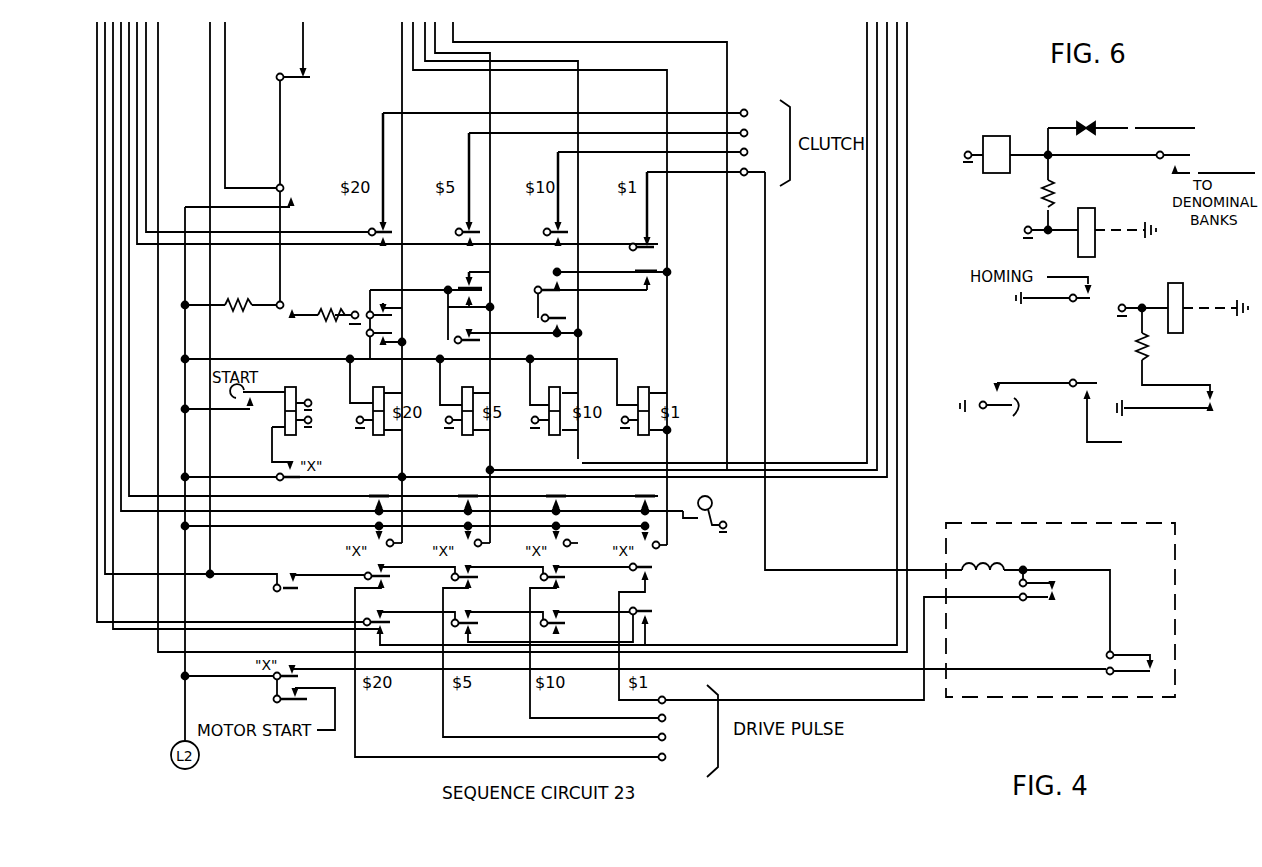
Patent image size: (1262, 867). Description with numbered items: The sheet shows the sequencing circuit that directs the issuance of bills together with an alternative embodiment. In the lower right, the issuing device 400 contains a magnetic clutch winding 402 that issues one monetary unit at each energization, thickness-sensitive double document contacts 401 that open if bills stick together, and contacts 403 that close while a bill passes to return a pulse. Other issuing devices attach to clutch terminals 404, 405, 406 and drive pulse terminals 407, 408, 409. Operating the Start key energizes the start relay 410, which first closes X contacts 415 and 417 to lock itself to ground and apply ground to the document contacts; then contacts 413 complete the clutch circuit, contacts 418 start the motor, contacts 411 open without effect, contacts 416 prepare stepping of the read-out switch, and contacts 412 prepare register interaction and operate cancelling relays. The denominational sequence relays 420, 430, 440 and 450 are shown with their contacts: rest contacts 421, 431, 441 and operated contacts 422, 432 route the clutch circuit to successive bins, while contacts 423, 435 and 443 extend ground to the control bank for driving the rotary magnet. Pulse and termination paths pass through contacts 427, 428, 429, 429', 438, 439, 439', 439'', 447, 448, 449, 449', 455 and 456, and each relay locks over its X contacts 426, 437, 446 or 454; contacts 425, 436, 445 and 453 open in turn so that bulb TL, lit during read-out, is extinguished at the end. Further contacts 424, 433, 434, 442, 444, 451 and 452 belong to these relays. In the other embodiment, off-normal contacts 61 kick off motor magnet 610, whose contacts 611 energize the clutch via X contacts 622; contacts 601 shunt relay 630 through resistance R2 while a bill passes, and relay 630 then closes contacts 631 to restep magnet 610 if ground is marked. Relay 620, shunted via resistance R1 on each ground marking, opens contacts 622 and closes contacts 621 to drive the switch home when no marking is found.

In FIG. 4, the issuing device 400 is at (1176, 612).
In FIG. 4, the double document sensing contacts 401 is at (1154, 660).
In FIG. 4, the magnetic clutch winding 402 is at (1000, 576).
In FIG. 4, the bill passage contacts 403 is at (1058, 585).
In FIG. 4, the clutch terminal 404 is at (583, 113).
In FIG. 4, the clutch terminal 405 is at (626, 133).
In FIG. 4, the clutch terminal 406 is at (670, 152).
In FIG. 4, the drive pulse terminal 407 is at (615, 718).
In FIG. 4, the drive pulse terminal 408 is at (572, 738).
In FIG. 4, the drive pulse terminal 409 is at (528, 757).
In FIG. 4, the start relay 410 is at (284, 392).
In FIG. 4, the contacts 411 is at (303, 79).
In FIG. 4, the contacts 412 is at (292, 195).
In FIG. 4, the contacts 413 is at (292, 307).
In FIG. 4, the X contacts 415 is at (272, 472).
In FIG. 4, the contacts 416 is at (296, 588).
In FIG. 4, the X contacts 417 is at (297, 674).
In FIG. 4, the contacts 418 is at (304, 694).
In FIG. 4, the $20 sequence relay 420 is at (372, 392).
In FIG. 4, the contacts 421 is at (369, 229).
In FIG. 4, the contacts 422 is at (373, 242).
In FIG. 4, the contacts 423 is at (396, 316).
In FIG. 4, the contacts 424 is at (397, 334).
In FIG. 4, the contacts 425 is at (356, 502).
In FIG. 4, the X contacts 426 is at (368, 538).
In FIG. 4, the contacts 427 is at (388, 575).
In FIG. 4, the contacts 428 is at (386, 586).
In FIG. 4, the contacts 429 is at (374, 607).
In FIG. 4, the contacts 429' is at (405, 623).
In FIG. 4, the $5 relay 430 is at (460, 392).
In FIG. 4, the contacts 431 is at (458, 229).
In FIG. 4, the contacts 432 is at (468, 247).
In FIG. 4, the contacts 433 is at (463, 285).
In FIG. 4, the contacts 434 is at (478, 300).
In FIG. 4, the contacts 435 is at (482, 341).
In FIG. 4, the contacts 436 is at (446, 502).
In FIG. 4, the X contacts 437 is at (458, 538).
In FIG. 4, the contacts 438 is at (464, 568).
In FIG. 4, the contacts 439 is at (487, 578).
In FIG. 4, the contacts 439' is at (480, 609).
In FIG. 4, the contacts 439'' is at (492, 623).
In FIG. 4, the $10 relay 440 is at (548, 392).
In FIG. 4, the contacts 441 is at (547, 229).
In FIG. 4, the contacts 442 is at (556, 247).
In FIG. 4, the contacts 443 is at (536, 293).
In FIG. 4, the contacts 444 is at (542, 322).
In FIG. 4, the contacts 445 is at (531, 502).
In FIG. 4, the X contacts 446 is at (550, 540).
In FIG. 4, the contacts 447 is at (552, 568).
In FIG. 4, the contacts 448 is at (562, 578).
In FIG. 4, the contacts 449 is at (565, 610).
In FIG. 4, the contacts 449' is at (578, 627).
In FIG. 4, the $1 relay 450 is at (636, 392).
In FIG. 4, the contacts 451 is at (632, 243).
In FIG. 4, the contacts 452 is at (655, 283).
In FIG. 4, the contacts 453 is at (621, 502).
In FIG. 4, the X contacts 454 is at (640, 540).
In FIG. 4, the contacts 455 is at (655, 572).
In FIG. 4, the contacts 456 is at (655, 616).
In FIG. 4, the bulb TL is at (718, 512).
In FIG. 6, the motor magnet 610 is at (982, 136).
In FIG. 6, the relay 620 is at (1098, 215).
In FIG. 6, the contacts 621 is at (1093, 299).
In FIG. 6, the X contacts 622 is at (1076, 389).
In FIG. 6, the relay 630 is at (1184, 297).
In FIG. 6, the contacts 631 is at (1195, 170).
In FIG. 6, the contacts 601 is at (1185, 403).
In FIG. 6, the contacts 611 is at (992, 414).
In FIG. 6, the off-normal contacts 61 is at (1080, 126).
In FIG. 6, the resistance R1 is at (1042, 192).
In FIG. 6, the resistance R2 is at (1150, 348).